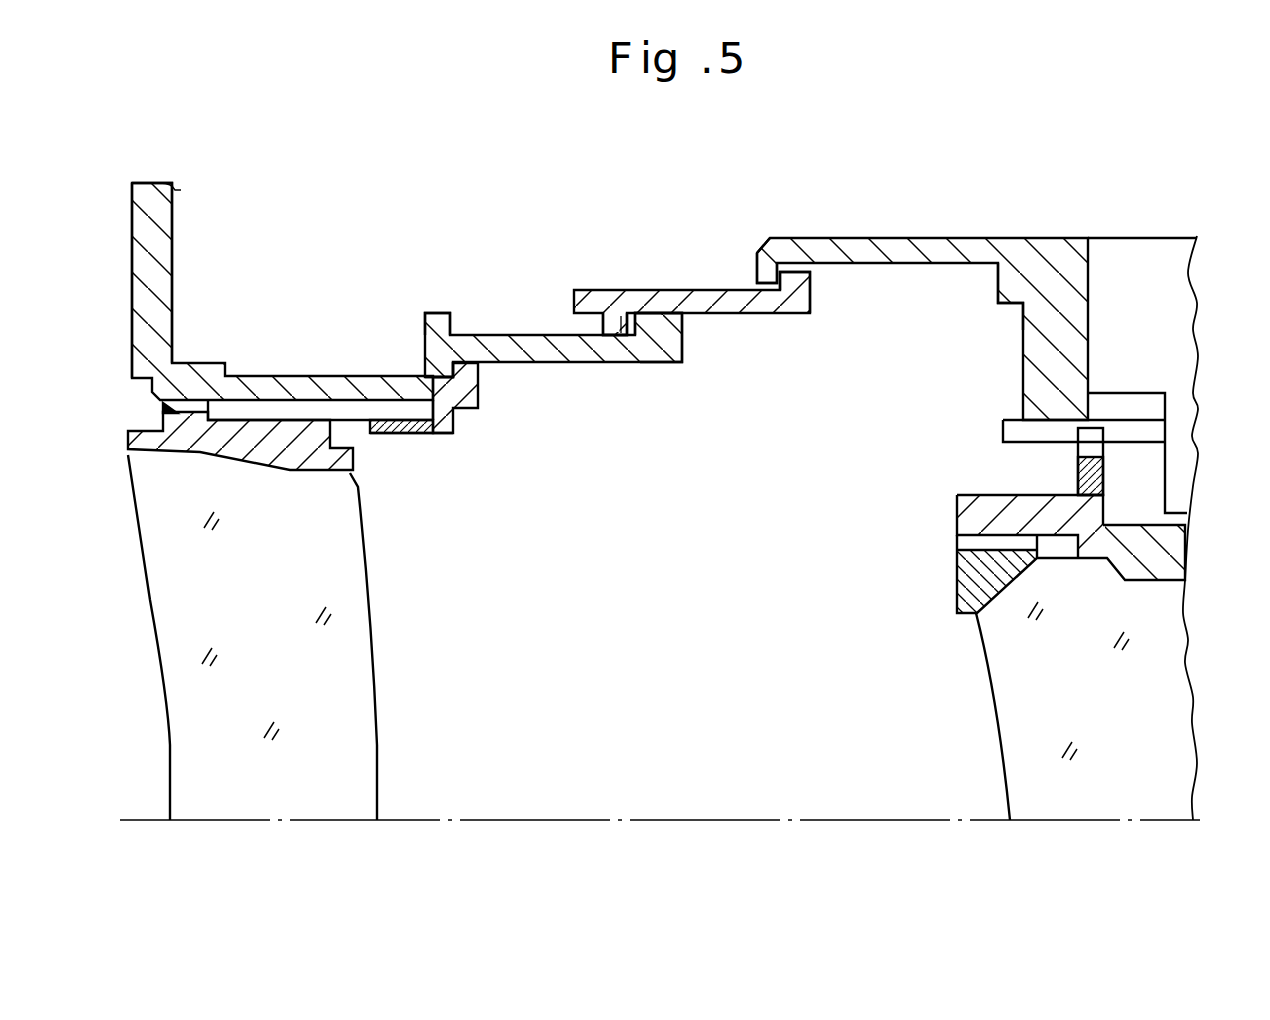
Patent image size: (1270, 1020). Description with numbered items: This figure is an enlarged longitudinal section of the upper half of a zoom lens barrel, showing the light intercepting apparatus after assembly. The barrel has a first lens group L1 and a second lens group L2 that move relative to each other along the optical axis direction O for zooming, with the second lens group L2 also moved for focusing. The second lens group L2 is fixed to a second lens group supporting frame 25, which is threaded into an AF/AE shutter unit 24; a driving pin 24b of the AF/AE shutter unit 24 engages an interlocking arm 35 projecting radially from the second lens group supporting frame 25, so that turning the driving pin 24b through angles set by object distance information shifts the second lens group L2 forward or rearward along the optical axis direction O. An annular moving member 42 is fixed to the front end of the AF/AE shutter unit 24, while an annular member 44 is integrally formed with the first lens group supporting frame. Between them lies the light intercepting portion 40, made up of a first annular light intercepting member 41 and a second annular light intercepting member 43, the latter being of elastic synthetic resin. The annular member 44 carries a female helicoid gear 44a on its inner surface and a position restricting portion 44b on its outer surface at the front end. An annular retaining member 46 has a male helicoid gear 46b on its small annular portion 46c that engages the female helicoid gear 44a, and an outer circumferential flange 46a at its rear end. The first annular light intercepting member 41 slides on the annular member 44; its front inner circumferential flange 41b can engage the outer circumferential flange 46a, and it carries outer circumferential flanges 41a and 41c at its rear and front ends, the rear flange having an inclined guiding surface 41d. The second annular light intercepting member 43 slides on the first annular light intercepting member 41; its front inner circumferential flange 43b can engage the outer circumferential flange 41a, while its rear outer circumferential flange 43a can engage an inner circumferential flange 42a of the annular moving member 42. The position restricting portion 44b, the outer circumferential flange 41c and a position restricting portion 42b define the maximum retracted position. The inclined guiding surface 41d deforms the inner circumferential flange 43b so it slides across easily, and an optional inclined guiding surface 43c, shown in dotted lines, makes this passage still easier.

The light intercepting portion 40 is at (512, 193).
The first annular light intercepting member 41 is at (586, 362).
The outer circumferential flange 41a is at (684, 345).
The inner circumferential flange 41b is at (416, 375).
The outer circumferential flange 41c is at (440, 312).
The inclined guiding surface 41d is at (686, 338).
The annular moving member 42 is at (934, 250).
The inner circumferential flange 42a is at (758, 273).
The position restricting portion 42b is at (998, 288).
The second annular light intercepting member 43 is at (762, 311).
The outer circumferential flange 43a is at (806, 275).
The inner circumferential flange 43b is at (601, 331).
The inclined guiding surface 43c is at (614, 331).
The annular member 44 is at (350, 386).
The female helicoid gear 44a is at (340, 406).
The position restricting portion 44b is at (227, 374).
The annular retaining member 46 is at (460, 436).
The outer circumferential flange 46a is at (480, 366).
The male helicoid gear 46b is at (420, 437).
The small annular portion 46c is at (391, 438).
The AF/AE shutter unit 24 is at (1176, 340).
The driving pin 24b is at (1133, 430).
The second lens group supporting frame 25 is at (967, 527).
The interlocking arm 35 is at (1078, 470).
The first lens group L1 is at (172, 735).
The second lens group L2 is at (1005, 735).
The optical axis direction O is at (686, 818).